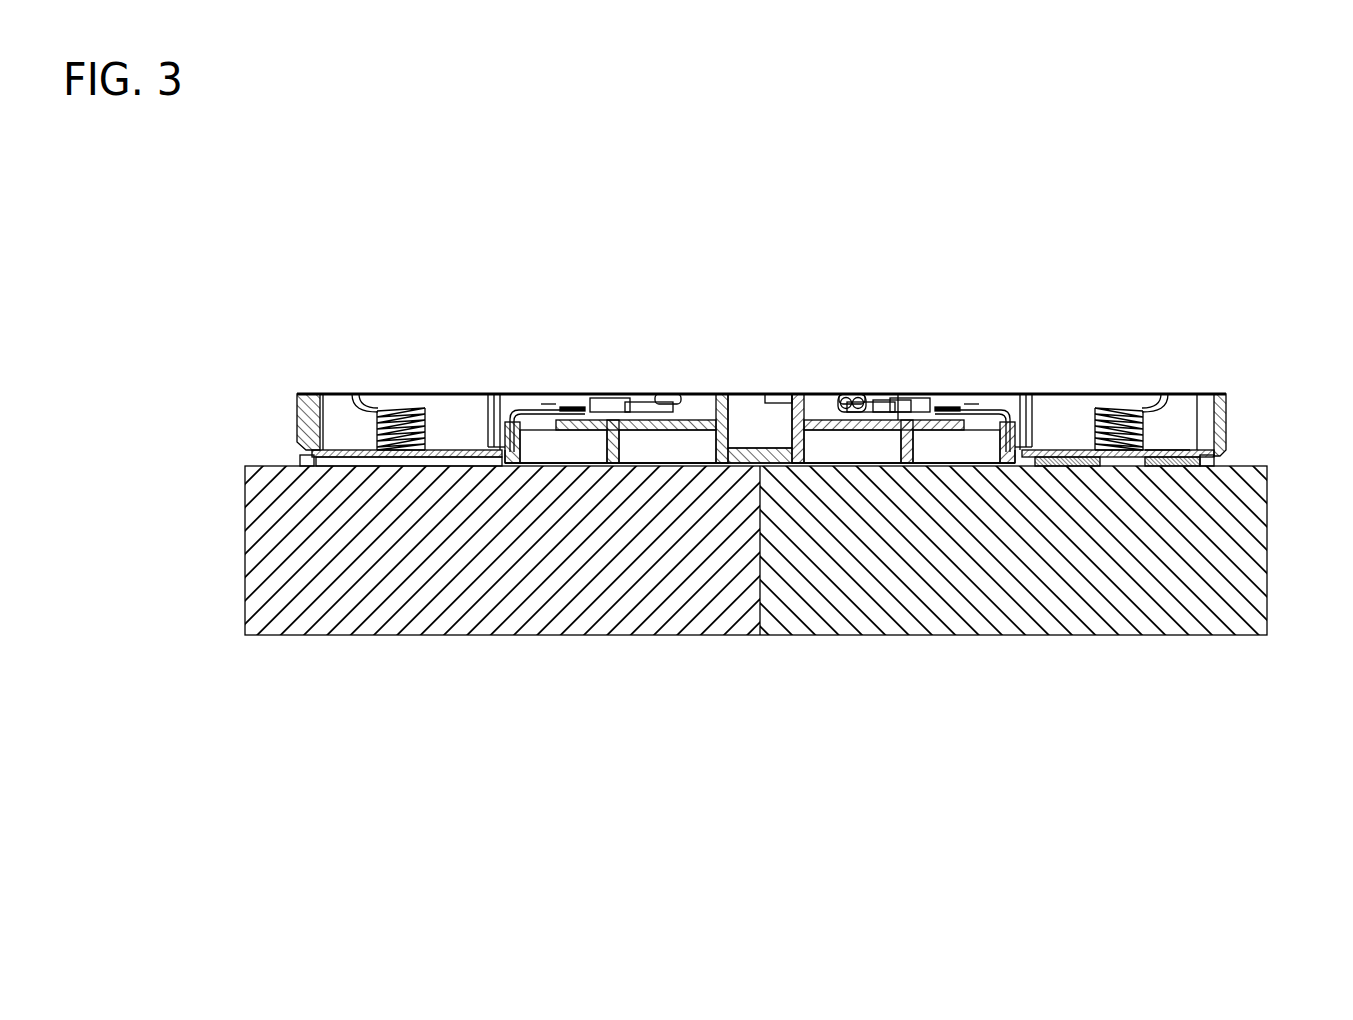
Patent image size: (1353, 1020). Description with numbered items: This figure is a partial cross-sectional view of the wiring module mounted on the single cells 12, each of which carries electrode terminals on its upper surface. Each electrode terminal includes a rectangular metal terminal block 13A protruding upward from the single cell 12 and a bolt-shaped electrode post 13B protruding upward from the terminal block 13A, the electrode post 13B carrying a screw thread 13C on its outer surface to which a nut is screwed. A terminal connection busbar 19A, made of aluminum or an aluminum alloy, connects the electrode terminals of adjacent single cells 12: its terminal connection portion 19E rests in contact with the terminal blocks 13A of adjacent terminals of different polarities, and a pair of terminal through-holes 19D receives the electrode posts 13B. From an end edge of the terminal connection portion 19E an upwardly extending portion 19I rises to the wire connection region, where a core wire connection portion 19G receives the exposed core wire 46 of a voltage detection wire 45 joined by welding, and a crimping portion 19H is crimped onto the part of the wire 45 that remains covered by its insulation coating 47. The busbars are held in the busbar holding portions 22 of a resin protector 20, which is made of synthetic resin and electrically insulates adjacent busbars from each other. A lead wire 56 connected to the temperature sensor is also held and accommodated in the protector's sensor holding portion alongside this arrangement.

The single cell 12 is at (1254, 556).
The terminal block 13A is at (303, 455).
The electrode post 13B is at (400, 408).
The screw thread 13C is at (359, 394).
The terminal connection busbar 19A is at (340, 450).
The terminal through-hole 19D is at (1145, 450).
The terminal connection portion 19E is at (455, 450).
The core wire connection portion 19G is at (541, 404).
The crimping portion 19H is at (589, 410).
The upwardly extending portion 19I is at (507, 450).
The resin protector 20 is at (1227, 416).
The busbar holding portion 22 is at (323, 393).
The voltage detection wire 45 is at (635, 400).
The core wire 46 is at (568, 408).
The insulation coating 47 is at (898, 394).
The lead wire 56 is at (860, 398).